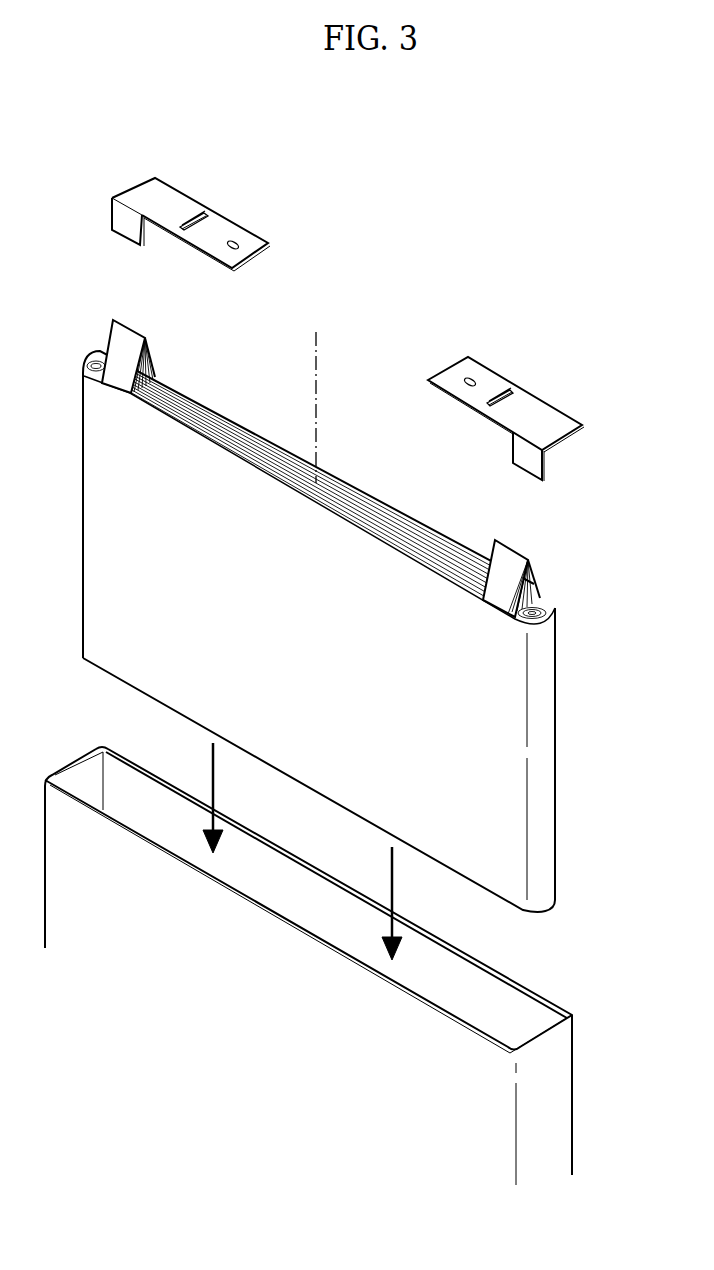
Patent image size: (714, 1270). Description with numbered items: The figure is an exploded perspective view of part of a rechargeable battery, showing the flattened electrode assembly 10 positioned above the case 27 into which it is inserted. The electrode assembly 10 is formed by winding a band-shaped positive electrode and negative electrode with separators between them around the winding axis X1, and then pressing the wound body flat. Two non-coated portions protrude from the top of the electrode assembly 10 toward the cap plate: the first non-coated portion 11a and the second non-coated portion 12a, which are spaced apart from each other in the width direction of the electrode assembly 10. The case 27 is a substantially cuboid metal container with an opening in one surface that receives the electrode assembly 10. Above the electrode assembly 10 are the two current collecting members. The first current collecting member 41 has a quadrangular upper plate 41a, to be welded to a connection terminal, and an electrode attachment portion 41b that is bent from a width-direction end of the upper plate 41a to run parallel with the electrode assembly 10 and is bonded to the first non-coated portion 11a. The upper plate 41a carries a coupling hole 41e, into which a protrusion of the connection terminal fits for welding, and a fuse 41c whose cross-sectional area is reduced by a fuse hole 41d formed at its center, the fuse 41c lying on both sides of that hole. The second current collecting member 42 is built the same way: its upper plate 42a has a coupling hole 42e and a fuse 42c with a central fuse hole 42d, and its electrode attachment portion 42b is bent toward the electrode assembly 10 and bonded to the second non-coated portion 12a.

The electrode assembly 10 is at (578, 683).
The first non-coated portion 11a is at (512, 558).
The second non-coated portion 12a is at (122, 345).
The case 27 is at (563, 1088).
The first current collecting member 41 is at (520, 394).
The upper plate 41a is at (475, 362).
The electrode attachment portion 41b is at (537, 465).
The fuse 41c is at (512, 388).
The fuse hole 41d is at (483, 410).
The coupling hole 41e is at (465, 378).
The second current collecting member 42 is at (180, 197).
The upper plate 42a is at (222, 227).
The electrode attachment portion 42b is at (112, 218).
The fuse 42c is at (207, 213).
The fuse hole 42d is at (180, 240).
The coupling hole 42e is at (240, 245).
The winding axis X1 is at (317, 380).